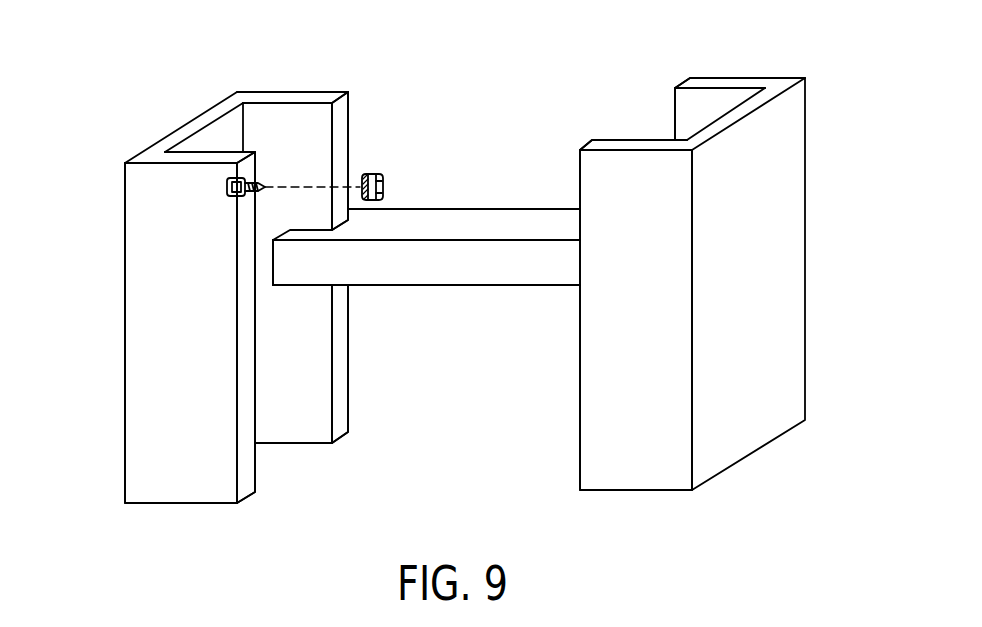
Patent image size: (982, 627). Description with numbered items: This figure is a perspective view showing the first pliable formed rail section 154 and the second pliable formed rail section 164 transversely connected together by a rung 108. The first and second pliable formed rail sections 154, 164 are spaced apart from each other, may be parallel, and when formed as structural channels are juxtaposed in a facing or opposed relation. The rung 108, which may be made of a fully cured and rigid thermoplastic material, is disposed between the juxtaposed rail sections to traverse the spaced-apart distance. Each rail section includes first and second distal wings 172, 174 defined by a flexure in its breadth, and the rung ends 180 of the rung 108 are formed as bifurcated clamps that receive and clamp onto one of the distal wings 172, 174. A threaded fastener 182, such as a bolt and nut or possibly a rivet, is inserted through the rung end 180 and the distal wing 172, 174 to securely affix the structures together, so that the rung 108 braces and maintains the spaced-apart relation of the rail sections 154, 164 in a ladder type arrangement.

The rung 108 is at (518, 223).
The first pliable formed rail section 154 is at (125, 312).
The second pliable formed rail section 164 is at (798, 262).
The first distal wing 172 is at (297, 96).
The second distal wing 174 is at (152, 152).
The rung end 180 is at (312, 268).
The threaded fastener 182 is at (226, 188).